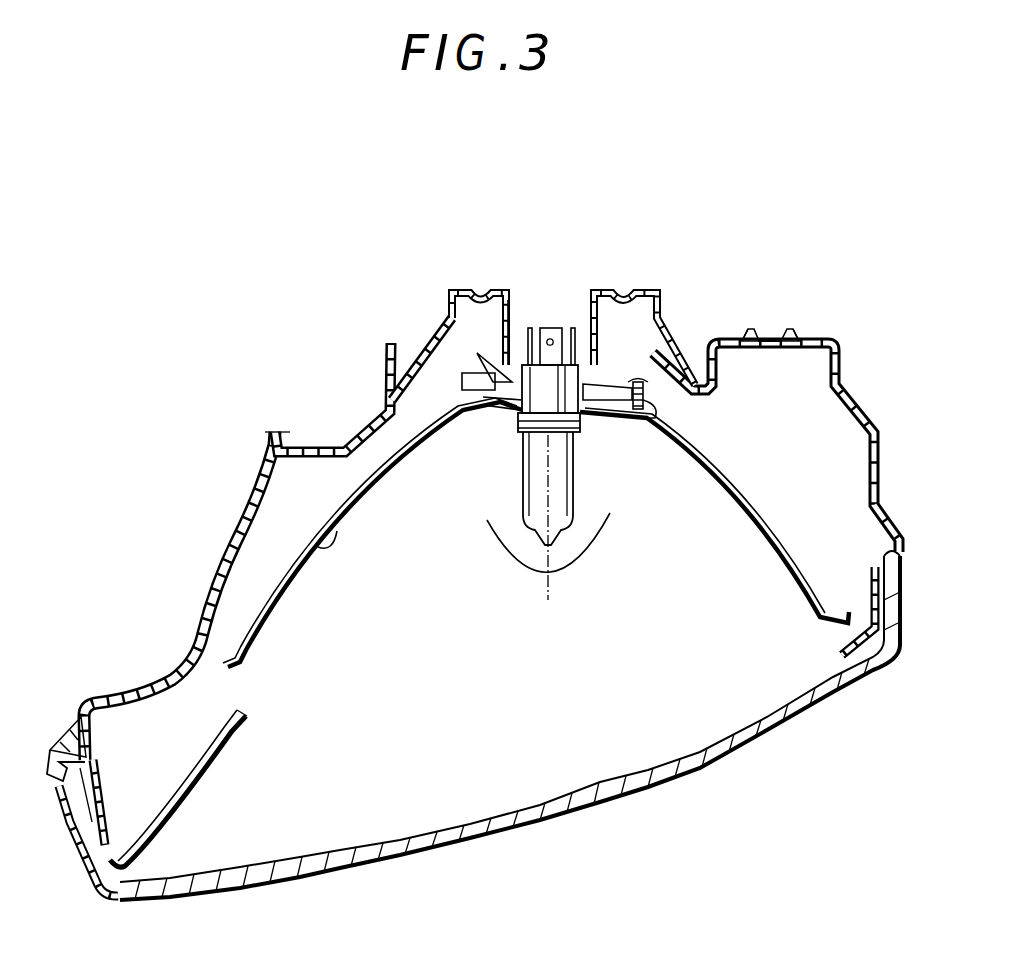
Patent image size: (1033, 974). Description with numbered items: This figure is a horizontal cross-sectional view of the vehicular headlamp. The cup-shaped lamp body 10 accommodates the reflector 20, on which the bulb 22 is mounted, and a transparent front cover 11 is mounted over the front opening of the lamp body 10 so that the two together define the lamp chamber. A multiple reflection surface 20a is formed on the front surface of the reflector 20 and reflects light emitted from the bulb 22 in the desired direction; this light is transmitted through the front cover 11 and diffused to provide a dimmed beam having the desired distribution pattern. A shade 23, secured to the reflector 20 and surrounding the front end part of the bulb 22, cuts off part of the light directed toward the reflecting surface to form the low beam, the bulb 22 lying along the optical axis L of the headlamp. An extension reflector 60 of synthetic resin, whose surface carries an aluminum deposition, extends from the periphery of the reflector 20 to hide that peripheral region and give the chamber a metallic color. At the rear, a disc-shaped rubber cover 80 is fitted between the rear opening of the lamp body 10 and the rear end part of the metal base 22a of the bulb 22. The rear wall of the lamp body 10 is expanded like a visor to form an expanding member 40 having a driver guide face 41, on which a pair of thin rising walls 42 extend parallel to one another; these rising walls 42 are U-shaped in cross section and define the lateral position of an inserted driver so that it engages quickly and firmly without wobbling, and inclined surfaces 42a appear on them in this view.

The lamp body 10 is at (238, 527).
The front cover 11 is at (648, 787).
The reflector 20 is at (390, 455).
The multiple reflection surface 20a is at (322, 542).
The bulb 22 is at (560, 502).
The metal base 22a is at (533, 390).
The shade 23 is at (503, 562).
The optical axis L is at (560, 583).
The expanding member 40 is at (846, 362).
The driver guide face 41 is at (771, 338).
The rising walls 42 is at (788, 337).
The projection inclined surfaces 42a is at (798, 340).
The extension reflector 60 is at (245, 745).
The cover 80 is at (612, 297).